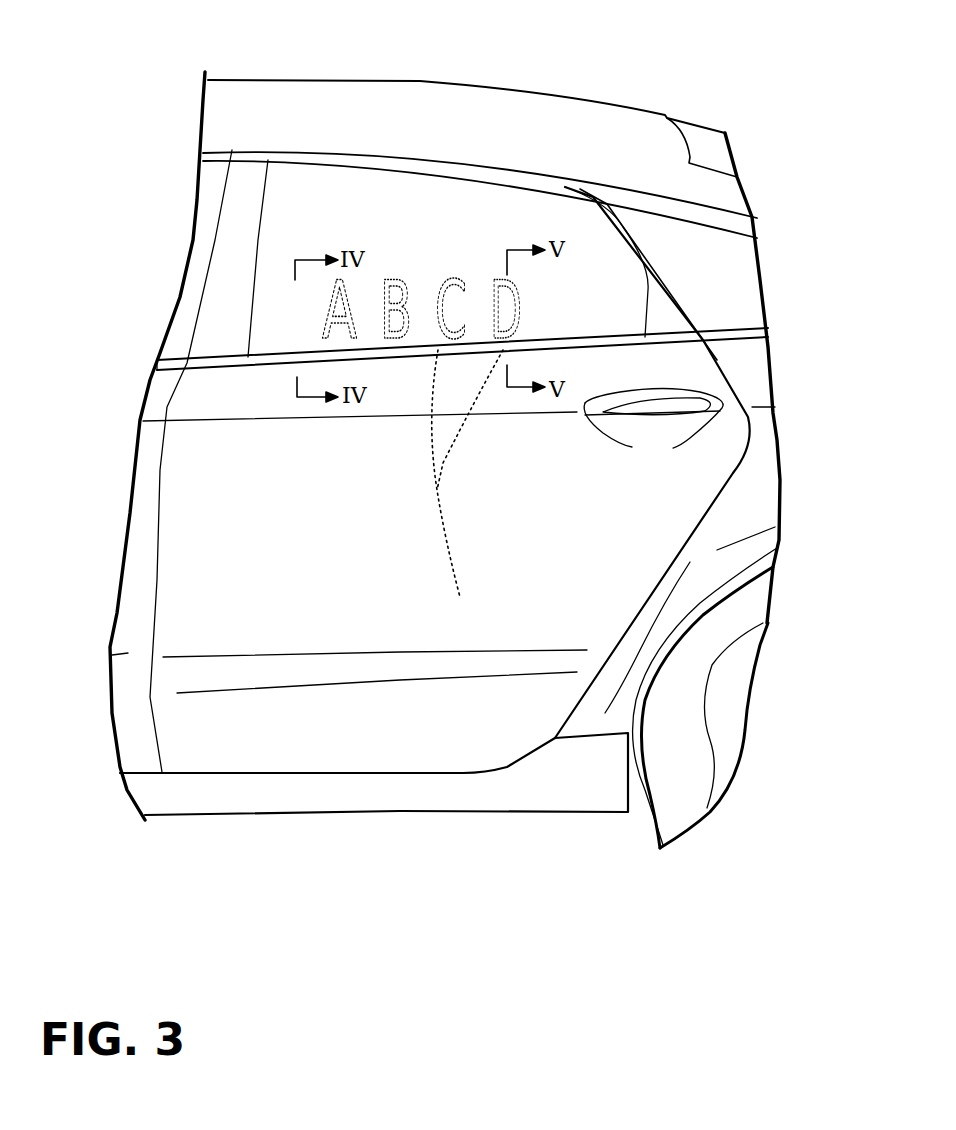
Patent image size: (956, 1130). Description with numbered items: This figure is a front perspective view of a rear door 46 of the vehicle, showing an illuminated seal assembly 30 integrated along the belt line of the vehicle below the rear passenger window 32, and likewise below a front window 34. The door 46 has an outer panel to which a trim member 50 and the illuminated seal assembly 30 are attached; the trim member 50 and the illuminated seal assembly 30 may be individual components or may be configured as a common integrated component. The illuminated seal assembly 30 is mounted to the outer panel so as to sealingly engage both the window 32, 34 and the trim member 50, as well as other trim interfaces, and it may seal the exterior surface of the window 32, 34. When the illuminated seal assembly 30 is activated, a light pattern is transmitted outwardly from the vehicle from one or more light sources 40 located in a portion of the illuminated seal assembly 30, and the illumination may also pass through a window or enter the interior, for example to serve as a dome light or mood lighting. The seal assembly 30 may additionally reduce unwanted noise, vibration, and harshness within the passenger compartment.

The illuminated seal assembly 30 is at (622, 327).
The rear passenger window 32 is at (416, 196).
The front window 34 is at (211, 182).
The light sources 40 is at (460, 597).
The door 46 is at (320, 623).
The trim member 50 is at (310, 357).